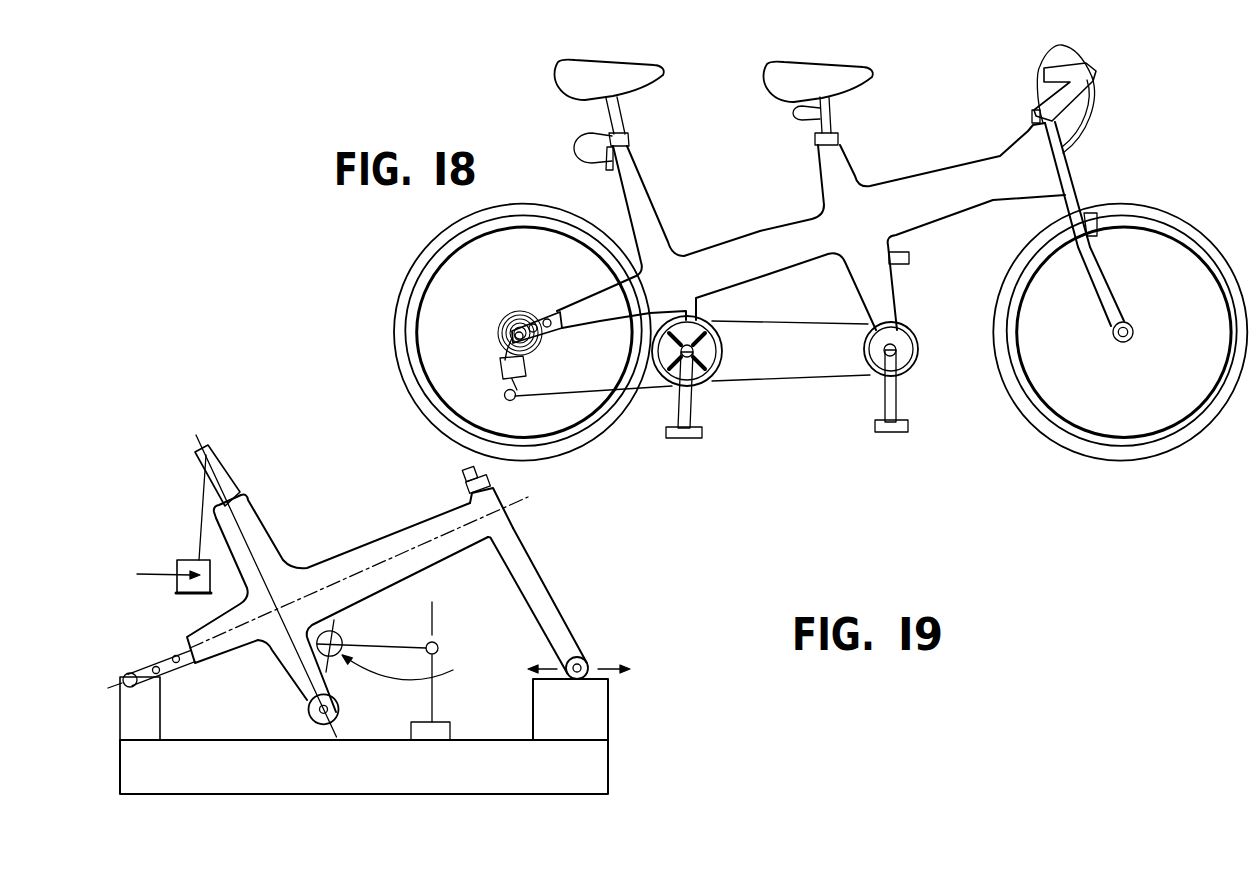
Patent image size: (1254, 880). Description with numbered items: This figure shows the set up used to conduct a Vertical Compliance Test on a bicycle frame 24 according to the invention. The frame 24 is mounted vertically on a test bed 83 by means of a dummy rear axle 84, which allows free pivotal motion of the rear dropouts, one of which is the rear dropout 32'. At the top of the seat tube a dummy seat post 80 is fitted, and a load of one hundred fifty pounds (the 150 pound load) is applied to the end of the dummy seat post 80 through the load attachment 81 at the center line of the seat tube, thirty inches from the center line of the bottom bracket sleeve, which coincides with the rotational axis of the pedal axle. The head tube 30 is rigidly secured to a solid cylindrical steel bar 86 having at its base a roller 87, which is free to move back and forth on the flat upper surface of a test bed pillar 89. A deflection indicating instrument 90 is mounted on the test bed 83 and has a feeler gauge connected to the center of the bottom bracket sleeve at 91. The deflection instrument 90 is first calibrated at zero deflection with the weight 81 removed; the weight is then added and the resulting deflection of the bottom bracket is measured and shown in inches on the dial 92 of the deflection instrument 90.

The frame 24 is at (354, 553).
The head tube 30 is at (482, 486).
The rear dropout 32' is at (163, 680).
The dummy seat post 80 is at (208, 456).
The load attachment 81 is at (154, 588).
The test bed 83 is at (472, 765).
The dummy rear axle 84 is at (130, 672).
The solid cylindrical steel bar 86 is at (556, 607).
The roller 87 is at (585, 658).
The test bed pillar 89 is at (600, 708).
The deflection indicating instrument 90 is at (358, 637).
The center of the bottom bracket sleeve 91 is at (340, 710).
The dial 92 is at (334, 633).
The 150 pound load 150 is at (187, 594).